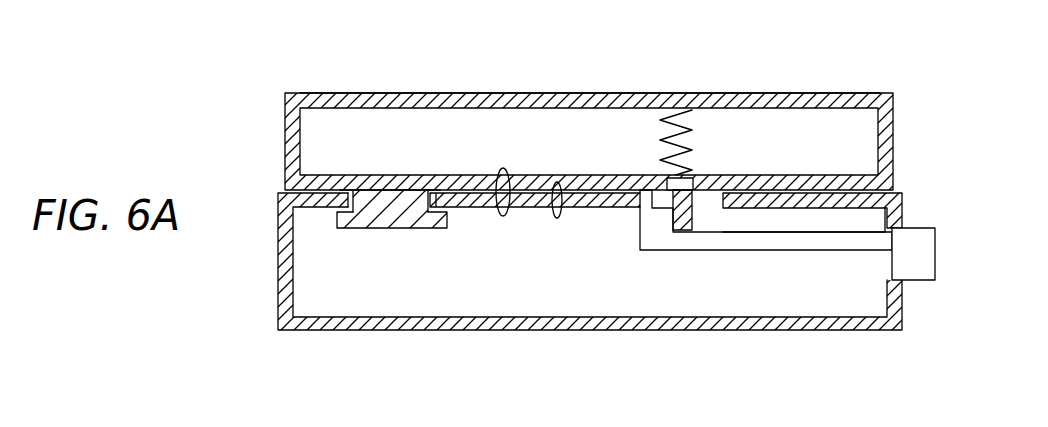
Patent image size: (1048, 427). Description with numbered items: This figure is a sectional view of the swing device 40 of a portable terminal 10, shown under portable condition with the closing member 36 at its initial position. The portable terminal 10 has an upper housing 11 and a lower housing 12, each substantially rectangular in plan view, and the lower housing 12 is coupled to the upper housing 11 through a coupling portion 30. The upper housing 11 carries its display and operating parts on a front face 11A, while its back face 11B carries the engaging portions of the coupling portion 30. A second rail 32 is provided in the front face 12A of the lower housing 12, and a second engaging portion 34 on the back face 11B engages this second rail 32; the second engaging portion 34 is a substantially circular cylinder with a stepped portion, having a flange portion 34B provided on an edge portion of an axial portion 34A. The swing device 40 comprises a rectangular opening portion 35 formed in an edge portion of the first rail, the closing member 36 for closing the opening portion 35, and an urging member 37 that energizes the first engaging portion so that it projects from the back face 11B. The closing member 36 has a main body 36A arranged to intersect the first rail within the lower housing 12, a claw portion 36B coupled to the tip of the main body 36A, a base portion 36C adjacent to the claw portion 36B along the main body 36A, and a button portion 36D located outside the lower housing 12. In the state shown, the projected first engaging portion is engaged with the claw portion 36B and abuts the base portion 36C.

The portable terminal 10 is at (918, 108).
The upper housing 11 is at (616, 94).
The front face of the upper housing 11A is at (572, 94).
The back face of the upper housing 11B is at (557, 182).
The lower housing 12 is at (515, 328).
The front face of the lower housing 12A is at (505, 212).
The coupling portion 30 is at (465, 262).
The second rail 32 is at (367, 187).
The second engaging portion 34 is at (392, 253).
The axial portion 34A is at (384, 190).
The flange portion 34B is at (428, 228).
The opening portion 35 is at (603, 203).
The closing member 36 is at (785, 253).
The main body 36A is at (838, 238).
The claw portion 36B is at (637, 218).
The base portion 36C is at (707, 213).
The button portion 36D is at (937, 257).
The urging member 37 is at (732, 95).
The swing device 40 is at (655, 262).